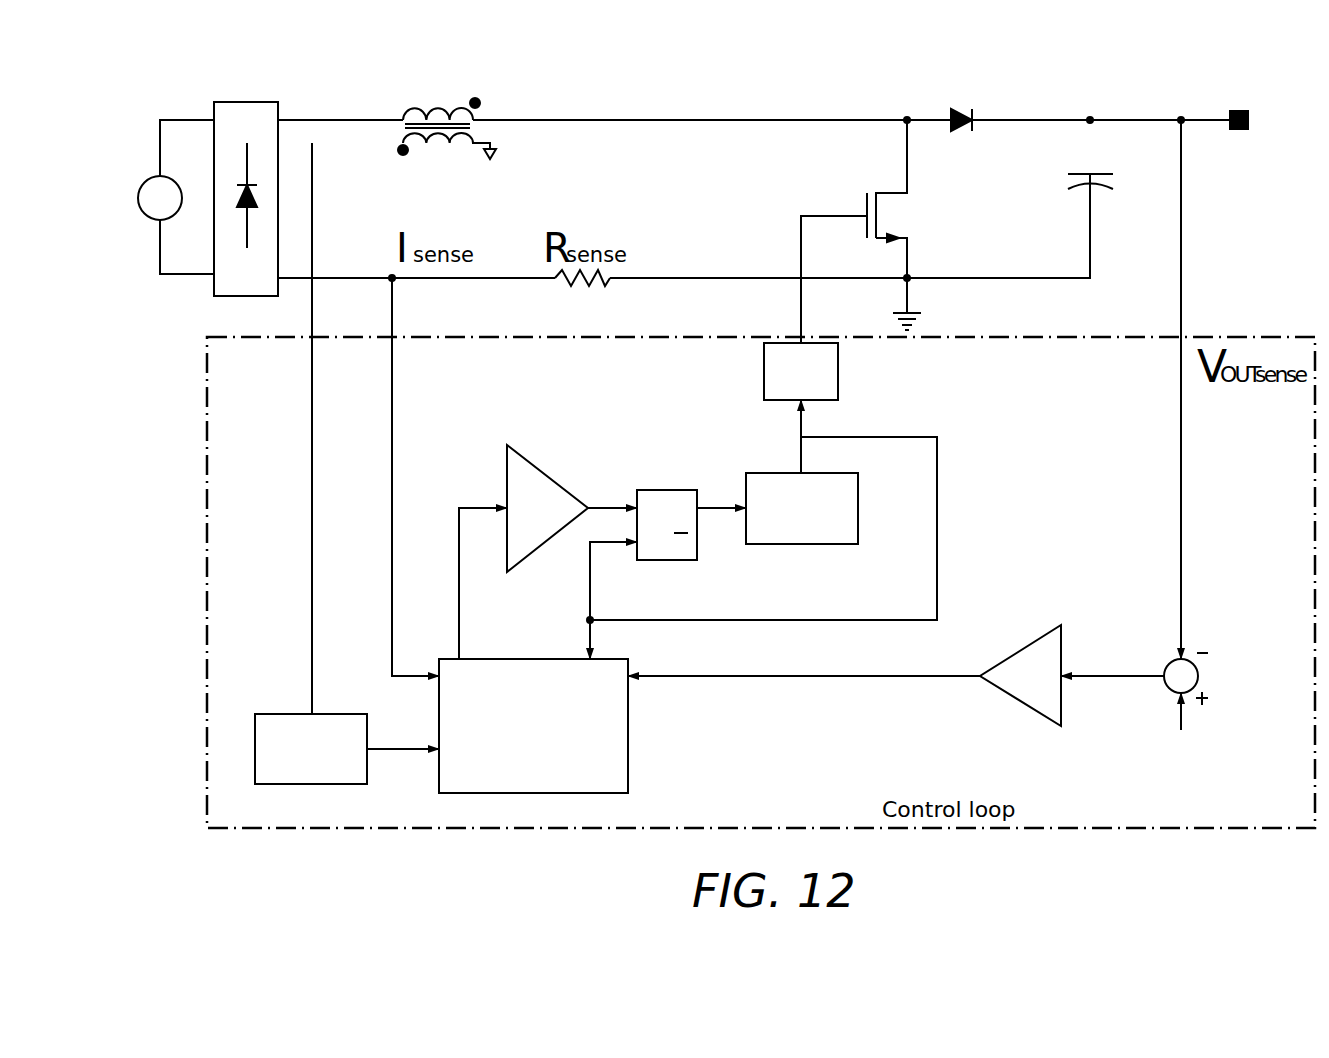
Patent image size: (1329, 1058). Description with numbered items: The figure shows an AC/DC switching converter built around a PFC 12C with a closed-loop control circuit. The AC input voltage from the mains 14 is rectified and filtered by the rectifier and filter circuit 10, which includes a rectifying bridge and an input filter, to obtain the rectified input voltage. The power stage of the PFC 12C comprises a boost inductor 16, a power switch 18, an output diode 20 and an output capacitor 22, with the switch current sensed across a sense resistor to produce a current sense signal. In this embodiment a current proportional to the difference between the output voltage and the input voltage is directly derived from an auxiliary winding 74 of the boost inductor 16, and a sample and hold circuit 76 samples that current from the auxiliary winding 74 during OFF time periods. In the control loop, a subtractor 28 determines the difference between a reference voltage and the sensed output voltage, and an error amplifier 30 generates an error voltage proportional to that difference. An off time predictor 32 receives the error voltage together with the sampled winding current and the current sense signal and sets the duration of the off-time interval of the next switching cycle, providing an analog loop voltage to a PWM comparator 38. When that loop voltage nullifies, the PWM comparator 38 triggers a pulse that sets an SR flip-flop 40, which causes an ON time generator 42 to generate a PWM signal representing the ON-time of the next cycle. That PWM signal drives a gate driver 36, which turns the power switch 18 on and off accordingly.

The rectifier and filter circuit 10 is at (248, 102).
The mains 14 is at (138, 197).
The inductor 16 is at (454, 128).
The auxiliary winding 74 is at (439, 132).
The power switch 18 is at (878, 203).
The output diode 20 is at (962, 108).
The output capacitor 22 is at (1076, 172).
The PFC 12C is at (1143, 98).
The gate driver 36 is at (764, 370).
The PWM zero-detection comparator 38 is at (548, 477).
The SR flip-flop 40 is at (665, 490).
The ON time generator 42 is at (840, 473).
The off time predictor 32 is at (628, 727).
The sample and hold circuit 76 is at (330, 714).
The error amplifier 30 is at (1020, 703).
The subtractor 28 is at (1168, 660).